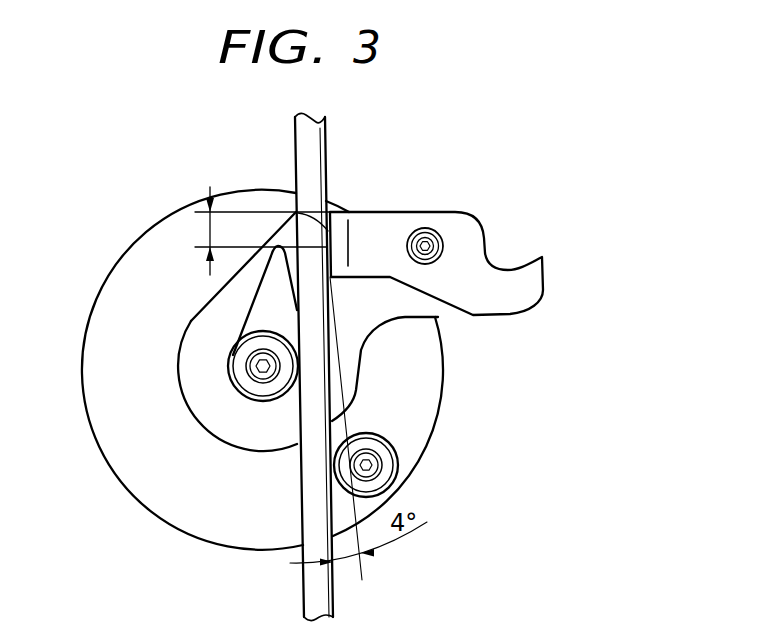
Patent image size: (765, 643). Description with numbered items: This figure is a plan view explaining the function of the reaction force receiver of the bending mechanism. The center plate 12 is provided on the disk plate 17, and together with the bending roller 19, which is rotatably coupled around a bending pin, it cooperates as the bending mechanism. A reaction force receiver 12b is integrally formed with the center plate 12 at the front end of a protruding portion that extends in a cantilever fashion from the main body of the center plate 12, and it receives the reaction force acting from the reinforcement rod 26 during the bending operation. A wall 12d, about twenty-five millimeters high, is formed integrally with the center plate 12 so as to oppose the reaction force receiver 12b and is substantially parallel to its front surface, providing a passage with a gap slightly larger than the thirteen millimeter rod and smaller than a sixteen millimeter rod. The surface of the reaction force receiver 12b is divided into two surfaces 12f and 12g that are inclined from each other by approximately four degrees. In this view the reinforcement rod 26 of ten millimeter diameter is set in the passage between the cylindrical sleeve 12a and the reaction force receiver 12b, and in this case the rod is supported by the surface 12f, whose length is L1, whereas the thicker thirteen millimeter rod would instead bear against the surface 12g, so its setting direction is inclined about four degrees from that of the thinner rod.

The center plate 12 is at (452, 212).
The cylindrical sleeve 12a is at (237, 383).
The reaction force receiver 12b is at (343, 233).
The wall 12d is at (270, 277).
The surface 12f is at (327, 232).
The surface 12g is at (279, 246).
The disk plate 17 is at (437, 360).
The bending roller 19 is at (396, 444).
The reinforcement rod 26 is at (320, 143).
The length of surface 12f L1 is at (254, 231).